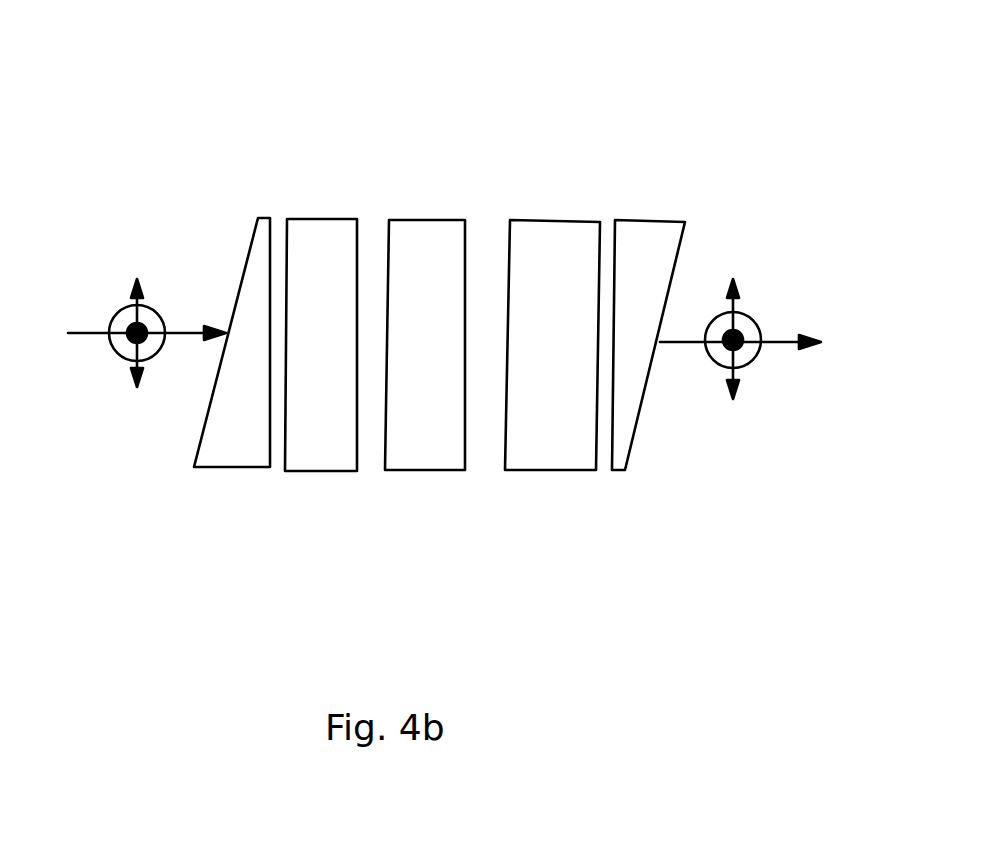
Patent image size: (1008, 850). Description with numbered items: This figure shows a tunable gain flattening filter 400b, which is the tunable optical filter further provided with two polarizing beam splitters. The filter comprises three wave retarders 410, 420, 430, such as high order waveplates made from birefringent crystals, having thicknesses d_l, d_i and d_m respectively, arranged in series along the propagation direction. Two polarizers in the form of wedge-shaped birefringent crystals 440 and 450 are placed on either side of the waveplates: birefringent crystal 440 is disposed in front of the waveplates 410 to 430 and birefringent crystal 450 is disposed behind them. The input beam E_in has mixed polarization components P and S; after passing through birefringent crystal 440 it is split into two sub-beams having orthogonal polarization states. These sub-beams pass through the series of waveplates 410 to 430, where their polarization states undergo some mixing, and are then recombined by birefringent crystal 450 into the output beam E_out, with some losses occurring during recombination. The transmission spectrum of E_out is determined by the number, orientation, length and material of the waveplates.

The tunable gain flattening filter 400b is at (728, 85).
The wave retarder 410 is at (325, 219).
The wave retarder 420 is at (440, 220).
The wave retarder 430 is at (562, 221).
The birefringent crystal 440 is at (227, 472).
The birefringent crystal 450 is at (613, 472).